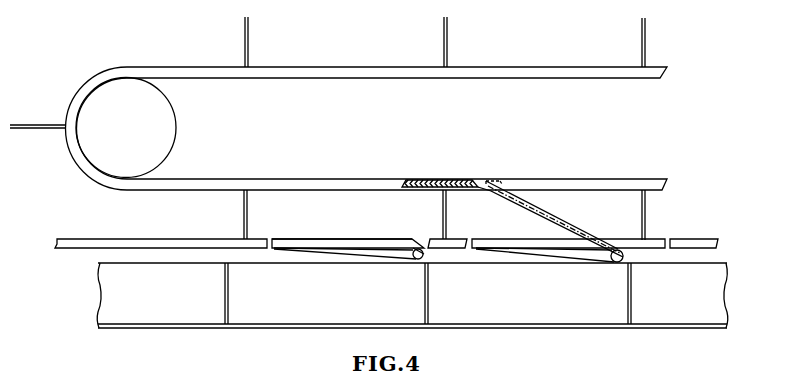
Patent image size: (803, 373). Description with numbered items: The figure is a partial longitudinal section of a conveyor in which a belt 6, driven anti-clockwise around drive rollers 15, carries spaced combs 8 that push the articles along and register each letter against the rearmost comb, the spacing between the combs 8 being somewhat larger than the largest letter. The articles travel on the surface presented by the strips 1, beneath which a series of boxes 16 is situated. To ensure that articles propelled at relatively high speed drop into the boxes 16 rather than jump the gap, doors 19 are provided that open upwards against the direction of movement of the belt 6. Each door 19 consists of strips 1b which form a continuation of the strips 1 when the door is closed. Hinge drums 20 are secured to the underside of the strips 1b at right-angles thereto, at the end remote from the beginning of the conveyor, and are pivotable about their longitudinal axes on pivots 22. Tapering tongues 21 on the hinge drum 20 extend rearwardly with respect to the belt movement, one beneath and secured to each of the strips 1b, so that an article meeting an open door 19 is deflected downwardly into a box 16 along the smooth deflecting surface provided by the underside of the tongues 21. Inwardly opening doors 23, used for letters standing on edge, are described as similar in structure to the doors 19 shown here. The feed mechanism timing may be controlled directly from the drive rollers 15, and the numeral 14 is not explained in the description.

The strips 1 is at (171, 244).
The strips 1b is at (519, 246).
The belt 6 is at (350, 184).
The combs 8 is at (249, 50).
The structure 14 is at (158, 367).
The drive rollers 15 is at (164, 124).
The boxes 16 is at (289, 318).
The doors 19 is at (503, 240).
The hinge drums 20 is at (417, 260).
The tapering tongues 21 is at (357, 258).
The pivots 22 is at (426, 256).
The doors 23 is at (314, 243).